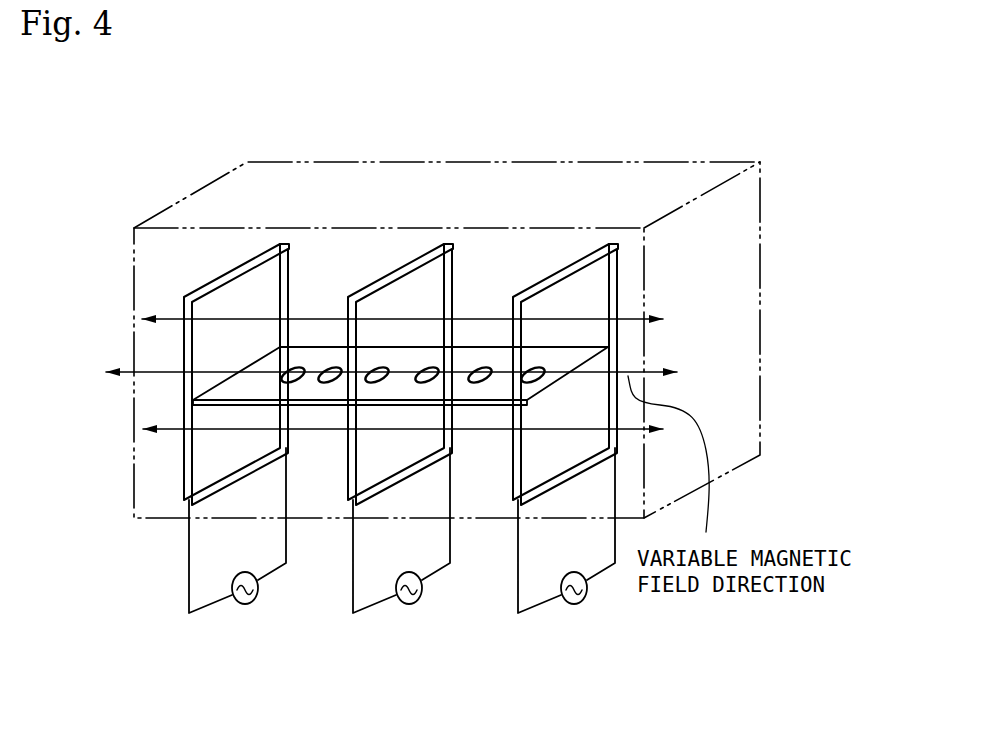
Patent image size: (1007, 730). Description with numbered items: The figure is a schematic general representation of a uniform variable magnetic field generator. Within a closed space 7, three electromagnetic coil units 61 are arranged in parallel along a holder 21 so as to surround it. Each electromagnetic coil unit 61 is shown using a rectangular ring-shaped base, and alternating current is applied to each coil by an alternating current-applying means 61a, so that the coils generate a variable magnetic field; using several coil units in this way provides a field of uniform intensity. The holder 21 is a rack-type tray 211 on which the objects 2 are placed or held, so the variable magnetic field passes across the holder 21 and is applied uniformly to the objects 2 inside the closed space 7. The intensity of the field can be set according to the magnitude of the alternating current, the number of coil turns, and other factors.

The objects 2 is at (276, 378).
The closed space 7 is at (650, 173).
The holder 21 is at (413, 241).
The rack-type tray 211 is at (315, 357).
The electromagnetic coil unit 61 is at (184, 338).
The alternating current-applying means 61a is at (253, 598).